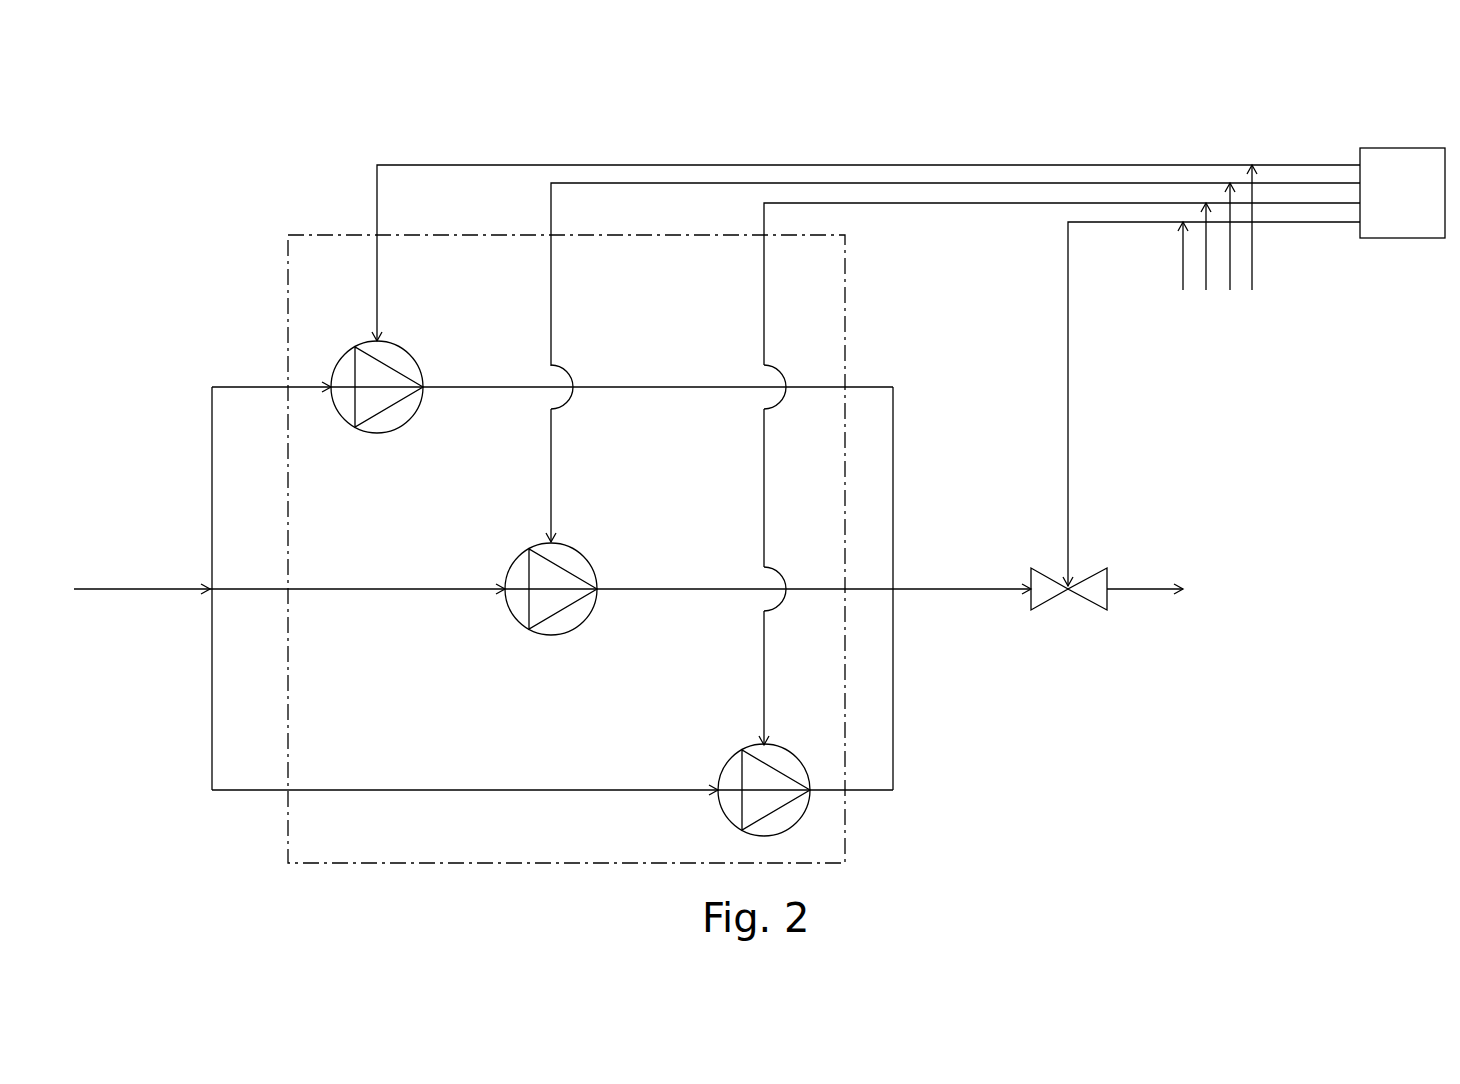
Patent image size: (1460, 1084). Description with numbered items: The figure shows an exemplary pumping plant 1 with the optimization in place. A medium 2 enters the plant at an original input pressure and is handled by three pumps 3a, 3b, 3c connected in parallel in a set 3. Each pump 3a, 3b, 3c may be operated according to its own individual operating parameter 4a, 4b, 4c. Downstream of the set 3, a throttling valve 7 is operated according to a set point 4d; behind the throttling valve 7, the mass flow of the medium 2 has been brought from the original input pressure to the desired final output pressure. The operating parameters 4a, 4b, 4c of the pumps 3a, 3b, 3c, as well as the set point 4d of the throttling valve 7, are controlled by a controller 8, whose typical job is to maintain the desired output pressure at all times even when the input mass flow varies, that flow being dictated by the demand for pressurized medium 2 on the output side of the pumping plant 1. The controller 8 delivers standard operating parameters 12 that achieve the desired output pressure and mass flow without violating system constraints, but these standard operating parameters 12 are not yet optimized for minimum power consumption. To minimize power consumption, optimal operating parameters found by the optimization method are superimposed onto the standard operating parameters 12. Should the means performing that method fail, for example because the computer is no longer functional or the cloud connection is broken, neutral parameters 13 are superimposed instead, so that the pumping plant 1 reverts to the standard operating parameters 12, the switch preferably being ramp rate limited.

The pumping plant 1 is at (242, 135).
The medium 2 is at (250, 387).
The set 3 is at (845, 826).
The pump 3a is at (386, 341).
The pump 3b is at (562, 542).
The pump 3c is at (776, 745).
The operating parameter 4a is at (400, 165).
The operating parameter 4b is at (551, 436).
The operating parameter 4c is at (764, 662).
The set point 4d is at (1068, 395).
The throttling valve 7 is at (1053, 600).
The controller 8 is at (1402, 193).
The standard operating parameters 12 is at (886, 405).
The neutral parameters 13 is at (1218, 240).